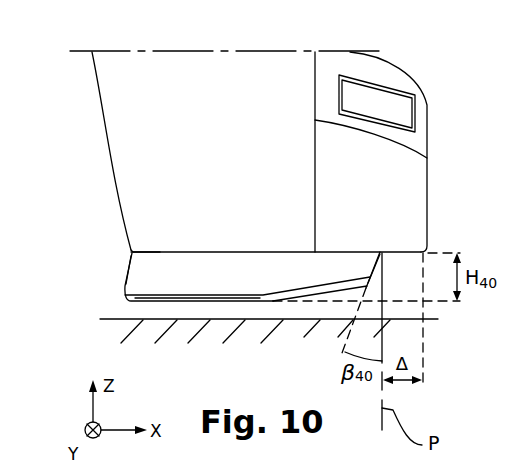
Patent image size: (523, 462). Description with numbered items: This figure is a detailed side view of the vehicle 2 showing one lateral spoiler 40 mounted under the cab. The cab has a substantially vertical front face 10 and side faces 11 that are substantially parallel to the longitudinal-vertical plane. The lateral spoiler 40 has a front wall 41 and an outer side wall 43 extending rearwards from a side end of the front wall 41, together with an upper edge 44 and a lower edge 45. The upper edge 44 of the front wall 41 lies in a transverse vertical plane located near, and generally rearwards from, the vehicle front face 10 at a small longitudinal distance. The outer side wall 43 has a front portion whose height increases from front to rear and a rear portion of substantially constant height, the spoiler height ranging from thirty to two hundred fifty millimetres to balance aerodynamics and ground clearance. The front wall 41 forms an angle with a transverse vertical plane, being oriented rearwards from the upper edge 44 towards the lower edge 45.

The vehicle 2 is at (455, 88).
The front face 10 is at (428, 125).
The side faces 11 is at (372, 193).
The lateral spoiler 40 is at (104, 286).
The front wall 41 is at (368, 283).
The outer side wall 43 is at (152, 268).
The upper edge 44 is at (157, 253).
The lower edge 45 is at (223, 302).